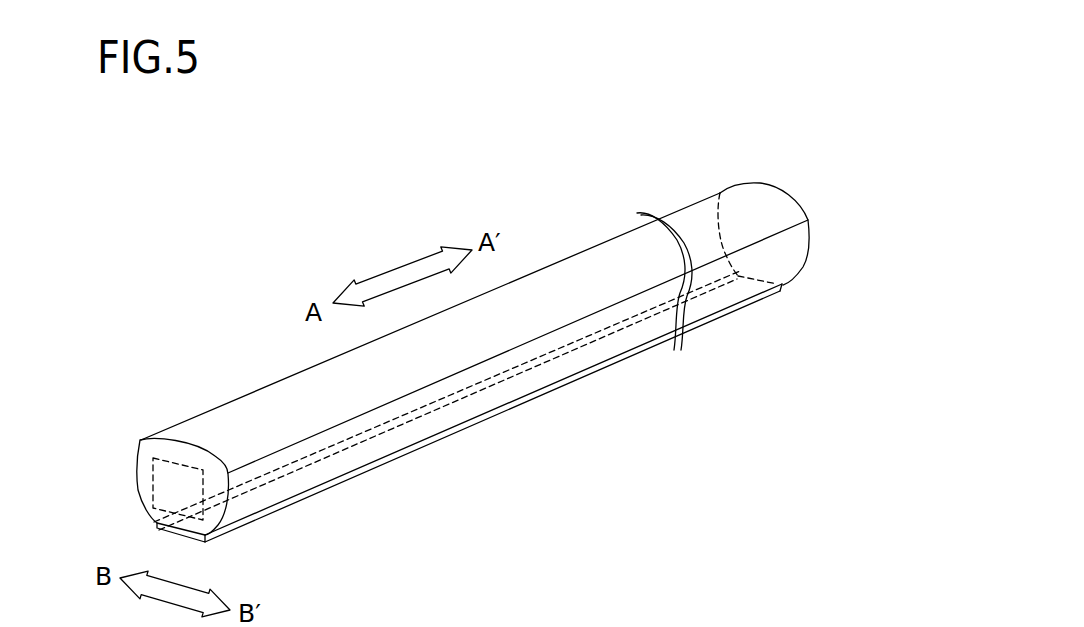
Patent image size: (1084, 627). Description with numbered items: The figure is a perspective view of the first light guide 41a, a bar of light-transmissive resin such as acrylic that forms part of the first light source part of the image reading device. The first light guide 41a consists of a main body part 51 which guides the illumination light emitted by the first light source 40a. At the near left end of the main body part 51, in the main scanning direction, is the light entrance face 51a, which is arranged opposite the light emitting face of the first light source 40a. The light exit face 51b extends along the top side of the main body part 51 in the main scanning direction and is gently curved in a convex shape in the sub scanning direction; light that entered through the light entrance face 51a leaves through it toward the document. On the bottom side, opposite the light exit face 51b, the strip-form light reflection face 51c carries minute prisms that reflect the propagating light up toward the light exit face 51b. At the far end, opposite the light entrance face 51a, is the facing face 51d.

The first light guide 41a is at (292, 225).
The main body part 51 is at (613, 342).
The light entrance face 51a is at (145, 480).
The light exit face 51b is at (565, 272).
The light reflection face 51c is at (502, 410).
The facing face 51d is at (812, 240).
The first light source 40a is at (172, 463).